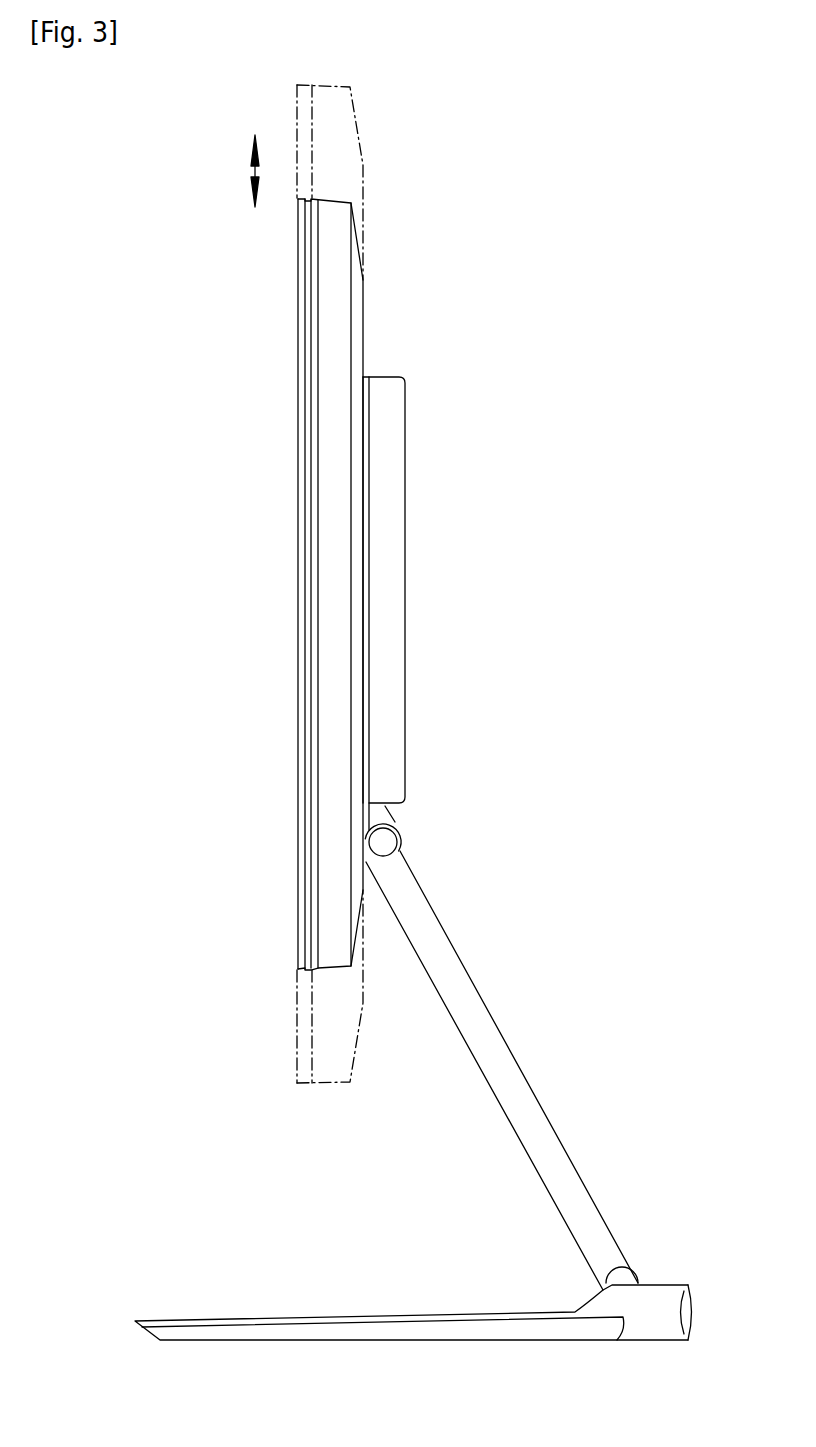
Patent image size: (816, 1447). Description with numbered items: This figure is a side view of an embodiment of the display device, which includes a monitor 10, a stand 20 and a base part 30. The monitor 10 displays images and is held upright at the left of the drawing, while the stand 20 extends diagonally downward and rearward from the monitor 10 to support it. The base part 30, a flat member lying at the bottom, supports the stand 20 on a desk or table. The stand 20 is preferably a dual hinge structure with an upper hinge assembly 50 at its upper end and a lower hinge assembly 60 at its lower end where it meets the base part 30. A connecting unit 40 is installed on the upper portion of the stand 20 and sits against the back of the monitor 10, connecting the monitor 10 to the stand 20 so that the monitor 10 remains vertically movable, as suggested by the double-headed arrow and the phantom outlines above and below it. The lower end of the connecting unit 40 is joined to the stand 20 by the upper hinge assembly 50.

The monitor 10 is at (302, 423).
The stand 20 is at (473, 1007).
The base part 30 is at (311, 1318).
The connecting unit 40 is at (397, 486).
The upper hinge assembly 50 is at (387, 838).
The lower hinge assembly 60 is at (621, 1276).